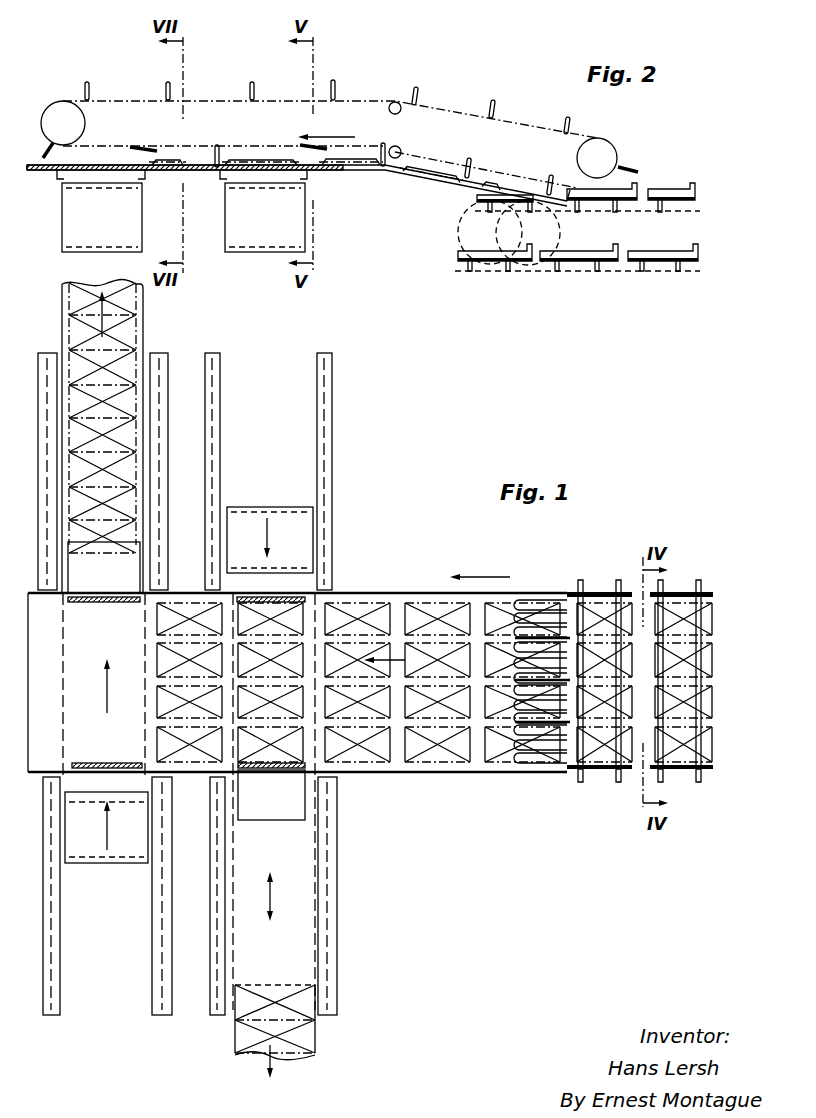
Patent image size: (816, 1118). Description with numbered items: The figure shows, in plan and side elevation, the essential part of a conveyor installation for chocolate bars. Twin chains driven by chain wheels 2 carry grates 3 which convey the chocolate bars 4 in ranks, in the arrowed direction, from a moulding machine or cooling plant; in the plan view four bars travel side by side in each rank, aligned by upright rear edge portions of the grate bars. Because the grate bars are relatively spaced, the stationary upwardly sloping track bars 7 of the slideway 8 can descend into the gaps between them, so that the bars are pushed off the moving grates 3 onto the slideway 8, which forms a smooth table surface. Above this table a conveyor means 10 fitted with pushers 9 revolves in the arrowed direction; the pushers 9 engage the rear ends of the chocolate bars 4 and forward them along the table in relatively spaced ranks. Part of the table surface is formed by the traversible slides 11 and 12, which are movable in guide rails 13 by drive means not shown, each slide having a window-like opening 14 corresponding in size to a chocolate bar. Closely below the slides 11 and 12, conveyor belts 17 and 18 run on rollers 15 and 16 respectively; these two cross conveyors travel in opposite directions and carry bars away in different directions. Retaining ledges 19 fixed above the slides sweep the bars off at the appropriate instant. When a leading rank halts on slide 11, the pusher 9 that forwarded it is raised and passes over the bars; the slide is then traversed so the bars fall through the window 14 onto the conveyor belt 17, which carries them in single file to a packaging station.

In FIG. 2, the chain wheels 2 is at (512, 213).
In FIG. 2, the grates 3 is at (683, 195).
In FIG. 2, the chocolate bars 4 is at (242, 163).
In FIG. 2, the track bars 7 is at (569, 200).
In FIG. 1, the track bars 7 is at (549, 623).
In FIG. 2, the slideway 8 is at (170, 163).
In FIG. 1, the slideway 8 is at (210, 607).
In FIG. 2, the pushers 9 is at (567, 118).
In FIG. 2, the conveyor means 10 is at (455, 108).
In FIG. 2, the traversible slide 11 is at (267, 163).
In FIG. 1, the traversible slide 11 is at (303, 903).
In FIG. 2, the traversible slide 12 is at (102, 163).
In FIG. 1, the guide rails 13 is at (214, 432).
In FIG. 1, the window-like opening 14 is at (120, 574).
In FIG. 1, the rollers 15 is at (313, 522).
In FIG. 1, the rollers 16 is at (78, 853).
In FIG. 1, the conveyor belt 17 is at (315, 1040).
In FIG. 1, the conveyor belt 18 is at (137, 325).
In FIG. 1, the retaining ledges 19 is at (265, 598).